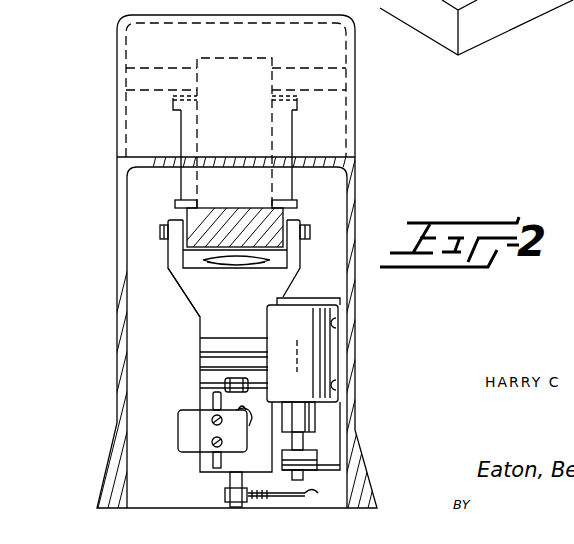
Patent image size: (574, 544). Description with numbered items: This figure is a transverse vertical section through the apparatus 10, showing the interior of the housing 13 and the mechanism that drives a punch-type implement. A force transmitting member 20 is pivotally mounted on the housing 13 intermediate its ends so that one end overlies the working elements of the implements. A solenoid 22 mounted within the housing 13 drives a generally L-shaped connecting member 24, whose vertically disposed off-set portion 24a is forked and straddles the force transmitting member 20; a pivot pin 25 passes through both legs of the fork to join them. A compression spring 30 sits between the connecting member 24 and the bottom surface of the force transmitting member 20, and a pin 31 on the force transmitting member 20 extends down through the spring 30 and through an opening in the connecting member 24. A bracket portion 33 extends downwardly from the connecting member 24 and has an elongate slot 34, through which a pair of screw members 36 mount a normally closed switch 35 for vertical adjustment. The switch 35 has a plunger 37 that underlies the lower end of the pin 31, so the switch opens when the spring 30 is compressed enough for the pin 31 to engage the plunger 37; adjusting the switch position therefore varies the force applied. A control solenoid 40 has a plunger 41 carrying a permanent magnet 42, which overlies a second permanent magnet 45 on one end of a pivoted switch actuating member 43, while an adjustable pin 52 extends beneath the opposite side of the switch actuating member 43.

The apparatus 10 is at (110, 165).
The housing 13 is at (355, 108).
The force transmitting member 20 is at (247, 208).
The solenoid 22 is at (290, 186).
The connecting member 24 is at (199, 322).
The off-set portion 24a is at (185, 295).
The pivot pin 25 is at (160, 233).
The compression spring 30 is at (238, 268).
The pin 31 is at (233, 378).
The bracket portion 33 is at (203, 470).
The elongate slot 34 is at (213, 399).
The normally closed switch 35 is at (178, 432).
The screw members 36 is at (212, 445).
The plunger 37 is at (250, 428).
The control solenoid 40 is at (297, 334).
The plunger 41 is at (307, 421).
The permanent magnet 42 is at (317, 452).
The switch actuating member 43 is at (307, 479).
The second permanent magnet 45 is at (320, 468).
The pin 52 is at (294, 497).